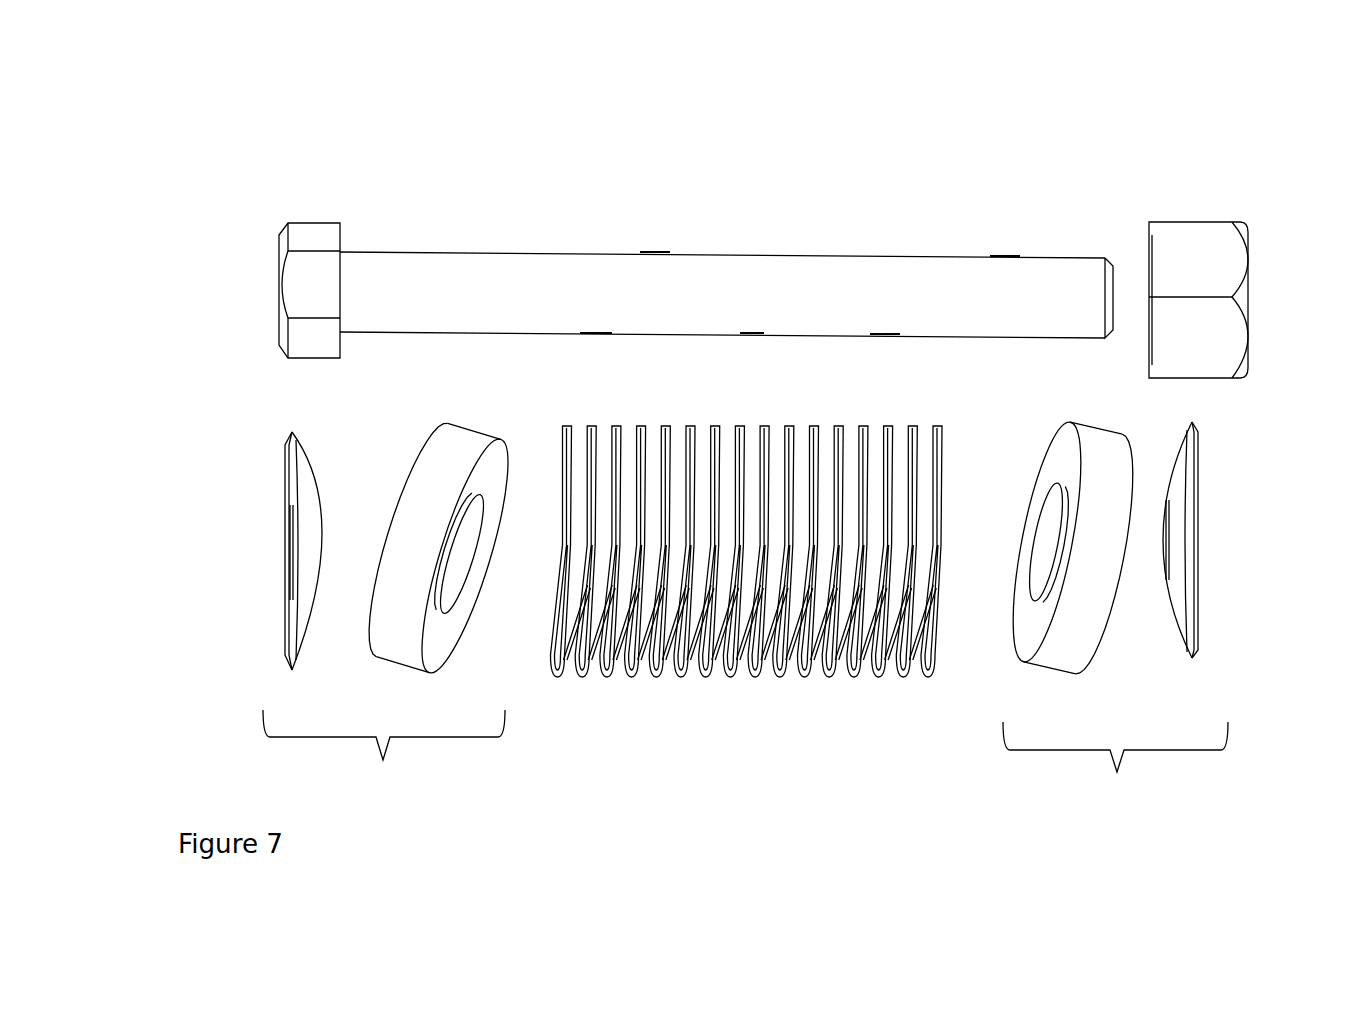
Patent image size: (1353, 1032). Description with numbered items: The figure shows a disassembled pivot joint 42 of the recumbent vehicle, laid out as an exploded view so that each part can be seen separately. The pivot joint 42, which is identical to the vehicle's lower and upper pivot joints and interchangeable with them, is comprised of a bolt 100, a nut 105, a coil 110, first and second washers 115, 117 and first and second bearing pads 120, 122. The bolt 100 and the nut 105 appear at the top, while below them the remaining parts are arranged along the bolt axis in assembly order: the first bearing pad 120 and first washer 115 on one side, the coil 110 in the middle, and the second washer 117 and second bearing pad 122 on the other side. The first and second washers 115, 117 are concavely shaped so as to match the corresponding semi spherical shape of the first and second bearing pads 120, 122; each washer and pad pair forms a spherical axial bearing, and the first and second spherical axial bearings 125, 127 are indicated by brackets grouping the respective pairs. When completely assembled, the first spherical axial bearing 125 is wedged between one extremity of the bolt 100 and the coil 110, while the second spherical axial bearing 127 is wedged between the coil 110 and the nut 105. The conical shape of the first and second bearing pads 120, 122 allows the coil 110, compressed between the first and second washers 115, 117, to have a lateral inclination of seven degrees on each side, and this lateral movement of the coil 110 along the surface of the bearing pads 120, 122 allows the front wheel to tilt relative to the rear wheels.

The pivot joint 42 is at (748, 183).
The bolt 100 is at (534, 283).
The nut 105 is at (1212, 250).
The coil 110 is at (775, 650).
The first washer 115 is at (427, 510).
The second washer 117 is at (1105, 463).
The first bearing pad 120 is at (290, 508).
The second bearing pad 122 is at (1190, 545).
The first spherical axial bearing 125 is at (384, 757).
The second spherical axial bearing 127 is at (1115, 768).